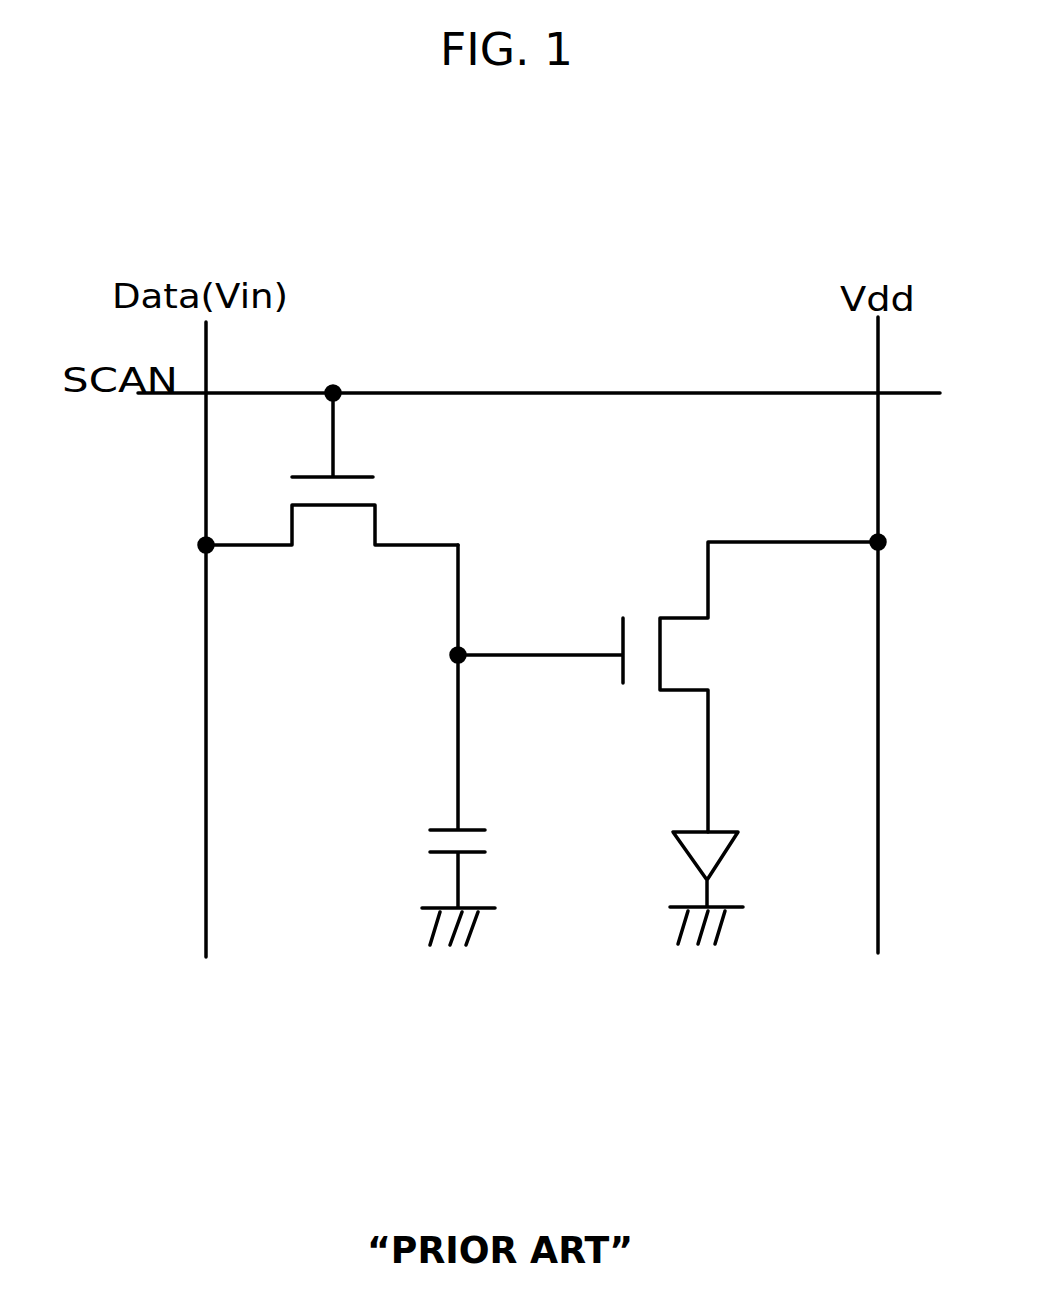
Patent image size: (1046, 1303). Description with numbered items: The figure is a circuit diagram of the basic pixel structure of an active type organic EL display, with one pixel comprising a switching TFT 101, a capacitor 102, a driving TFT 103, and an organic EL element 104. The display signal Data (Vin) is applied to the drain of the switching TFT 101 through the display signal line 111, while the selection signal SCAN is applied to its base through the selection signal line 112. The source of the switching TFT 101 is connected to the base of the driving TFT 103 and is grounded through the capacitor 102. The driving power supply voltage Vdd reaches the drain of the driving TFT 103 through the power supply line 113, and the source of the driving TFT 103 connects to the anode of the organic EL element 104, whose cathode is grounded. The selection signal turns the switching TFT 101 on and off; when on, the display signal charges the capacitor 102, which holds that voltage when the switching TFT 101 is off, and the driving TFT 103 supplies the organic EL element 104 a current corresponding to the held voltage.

The switching TFT 101 is at (329, 545).
The capacitor 102 is at (440, 828).
The driving TFT 103 is at (612, 672).
The organic EL element 104 is at (688, 828).
The display signal line 111 is at (208, 845).
The selection signal line 112 is at (530, 390).
The power supply line 113 is at (876, 925).